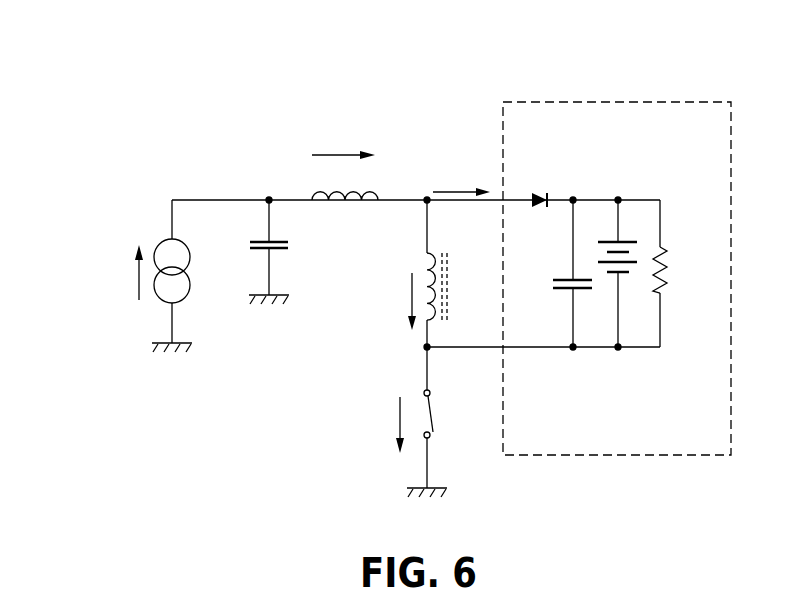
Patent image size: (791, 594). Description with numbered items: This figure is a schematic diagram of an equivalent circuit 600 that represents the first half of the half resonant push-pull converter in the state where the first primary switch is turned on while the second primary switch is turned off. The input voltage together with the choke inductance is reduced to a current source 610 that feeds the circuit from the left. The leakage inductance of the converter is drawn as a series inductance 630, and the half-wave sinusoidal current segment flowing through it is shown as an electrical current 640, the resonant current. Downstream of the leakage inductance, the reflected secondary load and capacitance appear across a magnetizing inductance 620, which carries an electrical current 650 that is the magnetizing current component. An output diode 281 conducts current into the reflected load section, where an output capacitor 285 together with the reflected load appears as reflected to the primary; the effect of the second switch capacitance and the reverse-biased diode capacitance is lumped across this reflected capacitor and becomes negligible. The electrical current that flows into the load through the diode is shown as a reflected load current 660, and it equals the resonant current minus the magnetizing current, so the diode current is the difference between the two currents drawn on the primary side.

The equivalent circuit 600 is at (648, 56).
The current source Iin 610 is at (122, 322).
The magnetizing inductance Lm 620 is at (386, 253).
The inductance Lk 630 is at (323, 175).
The electrical current Ir 640 is at (348, 114).
The electrical current Im 650 is at (380, 307).
The electrical current IRL 660 is at (457, 158).
The output diode D1 281 is at (552, 153).
The output capacitor Co 285 is at (543, 275).